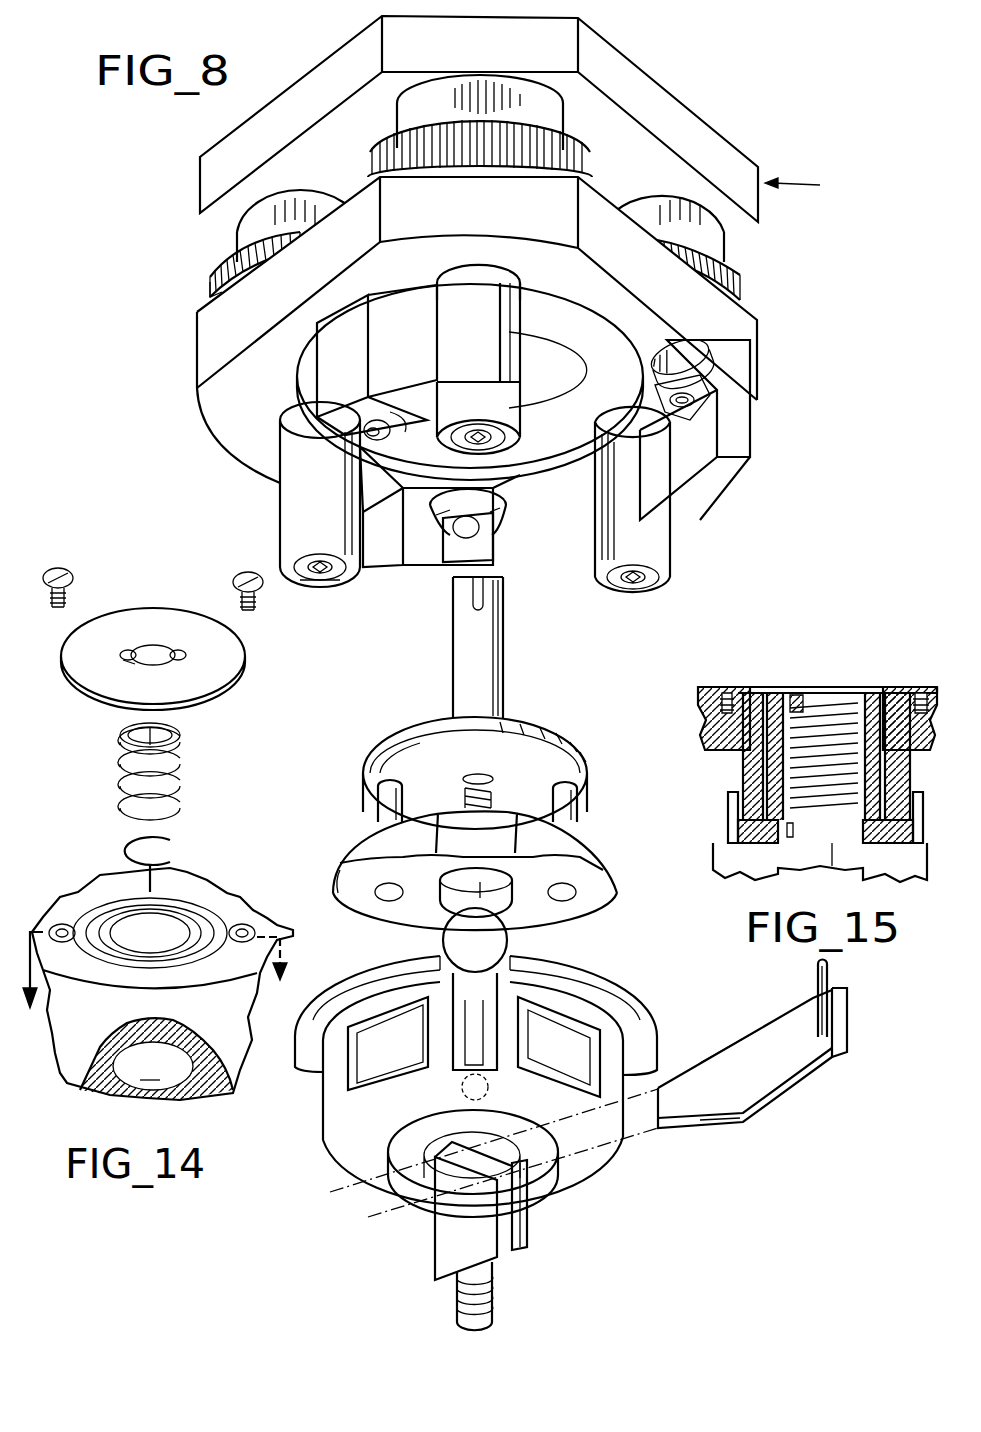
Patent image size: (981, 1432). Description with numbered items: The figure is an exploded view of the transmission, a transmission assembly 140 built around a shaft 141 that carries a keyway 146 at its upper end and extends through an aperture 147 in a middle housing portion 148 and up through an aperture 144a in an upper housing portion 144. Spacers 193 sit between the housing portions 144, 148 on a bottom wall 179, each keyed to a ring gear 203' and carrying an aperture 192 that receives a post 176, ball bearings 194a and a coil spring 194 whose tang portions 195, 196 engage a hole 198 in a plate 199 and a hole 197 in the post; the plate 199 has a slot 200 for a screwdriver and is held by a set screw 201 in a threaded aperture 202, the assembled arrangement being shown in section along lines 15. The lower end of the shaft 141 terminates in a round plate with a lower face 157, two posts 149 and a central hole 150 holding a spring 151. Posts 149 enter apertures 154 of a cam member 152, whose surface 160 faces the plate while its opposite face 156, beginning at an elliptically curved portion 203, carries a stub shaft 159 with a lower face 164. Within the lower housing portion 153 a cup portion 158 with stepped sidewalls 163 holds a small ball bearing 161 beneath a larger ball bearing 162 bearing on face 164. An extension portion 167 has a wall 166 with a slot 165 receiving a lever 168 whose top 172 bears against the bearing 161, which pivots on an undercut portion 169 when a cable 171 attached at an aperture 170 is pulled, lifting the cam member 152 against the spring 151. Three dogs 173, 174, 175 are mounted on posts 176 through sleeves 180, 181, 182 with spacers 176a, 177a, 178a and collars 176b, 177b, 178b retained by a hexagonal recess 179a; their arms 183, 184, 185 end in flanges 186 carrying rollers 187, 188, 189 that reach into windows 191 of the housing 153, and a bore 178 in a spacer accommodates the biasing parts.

In FIG. 8, the drive assembly 140 is at (815, 188).
In FIG. 8, the shaft 141 is at (482, 662).
In FIG. 8, the upper housing portion 144 is at (330, 90).
In FIG. 15, the upper housing portion 144 is at (715, 723).
In FIG. 8, the aperture 144a is at (722, 318).
In FIG. 8, the keyway 146 is at (486, 603).
In FIG. 8, the aperture 147 is at (527, 340).
In FIG. 8, the middle housing portion 148 is at (518, 730).
In FIG. 15, the middle housing portion 148 is at (690, 904).
In FIG. 8, the posts 149 is at (568, 812).
In FIG. 8, the hole 150 is at (466, 782).
In FIG. 8, the spring 151 is at (493, 792).
In FIG. 8, the cam member 152 is at (593, 880).
In FIG. 8, the lower housing portion 153 is at (610, 1013).
In FIG. 8, the apertures 154 is at (392, 901).
In FIG. 8, the face 156 is at (353, 882).
In FIG. 8, the lower face 157 is at (420, 755).
In FIG. 8, the cup portion 158 is at (495, 1176).
In FIG. 8, the shaft 159 is at (450, 890).
In FIG. 8, the surface 160 is at (437, 815).
In FIG. 8, the ball bearing 161 is at (488, 1095).
In FIG. 8, the ball bearing 162 is at (495, 949).
In FIG. 8, the sidewalls 163 is at (470, 1149).
In FIG. 8, the lower face 164 is at (500, 907).
In FIG. 8, the slot 165 is at (543, 1200).
In FIG. 8, the wall 166 is at (523, 1243).
In FIG. 8, the extension portion 167 is at (455, 1240).
In FIG. 8, the lever 168 is at (770, 1070).
In FIG. 8, the undercut portion 169 is at (735, 1125).
In FIG. 8, the aperture 170 is at (848, 1035).
In FIG. 8, the cable 171 is at (830, 969).
In FIG. 8, the top 172 is at (733, 1047).
In FIG. 8, the dog 173 is at (345, 330).
In FIG. 8, the dog 174 is at (735, 436).
In FIG. 8, the dog 175 is at (482, 562).
In FIG. 15, the post 176 is at (832, 860).
In FIG. 8, the spacer 176a is at (490, 280).
In FIG. 8, the collar 176b is at (472, 400).
In FIG. 8, the spacer 177a is at (617, 418).
In FIG. 8, the collar 177b is at (662, 551).
In FIG. 14, the post bore 178 is at (177, 1062).
In FIG. 8, the spacer 178a is at (300, 425).
In FIG. 8, the collar 178b is at (308, 536).
In FIG. 8, the bottom wall 179 is at (215, 405).
In FIG. 8, the countersunk hexagonal recess 179a is at (327, 577).
In FIG. 8, the sleeve 180 is at (503, 365).
In FIG. 8, the sleeve 181 is at (620, 497).
In FIG. 8, the sleeve 182 is at (297, 487).
In FIG. 8, the arm 183 is at (397, 303).
In FIG. 8, the arm 184 is at (693, 493).
In FIG. 8, the arm 185 is at (387, 566).
In FIG. 8, the flanges 186 is at (693, 406).
In FIG. 8, the roller 187 is at (452, 415).
In FIG. 8, the roller 188 is at (660, 365).
In FIG. 8, the roller 189 is at (496, 500).
In FIG. 8, the windows 191 is at (410, 1054).
In FIG. 14, the aperture 192 is at (130, 950).
In FIG. 15, the aperture 192 is at (820, 851).
In FIG. 8, the spacer 193 is at (262, 215).
In FIG. 15, the spacer 193 is at (747, 765).
In FIG. 8, the coil spring 194 is at (178, 797).
In FIG. 15, the coil spring 194 is at (843, 720).
In FIG. 15, the ball bearings 194a is at (772, 693).
In FIG. 8, the tang portion 195 is at (170, 728).
In FIG. 15, the tang portion 195 is at (792, 693).
In FIG. 8, the tang portion 196 is at (170, 866).
In FIG. 15, the tang portion 196 is at (793, 830).
In FIG. 14, the hole 197 is at (152, 1082).
In FIG. 8, the hole 198 is at (160, 670).
In FIG. 8, the plate 199 is at (125, 625).
In FIG. 15, the plate 199 is at (750, 683).
In FIG. 8, the slot 200 is at (176, 652).
In FIG. 8, the set screw 201 is at (58, 568).
In FIG. 15, the set screw 201 is at (718, 687).
In FIG. 14, the threaded aperture 202 is at (247, 925).
In FIG. 8, the first generally elliptically curved portion 203 is at (176, 288).
In FIG. 15, the ring gear 203' is at (794, 817).
In FIG. 14, the section line 15 is at (158, 991).